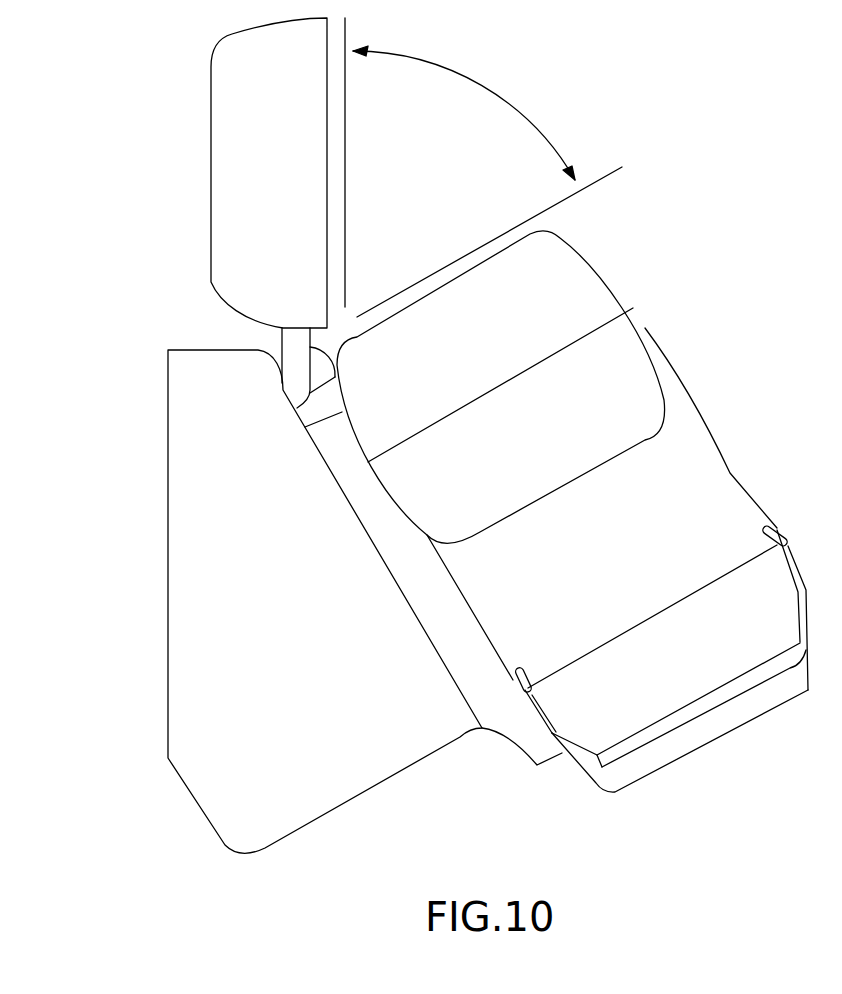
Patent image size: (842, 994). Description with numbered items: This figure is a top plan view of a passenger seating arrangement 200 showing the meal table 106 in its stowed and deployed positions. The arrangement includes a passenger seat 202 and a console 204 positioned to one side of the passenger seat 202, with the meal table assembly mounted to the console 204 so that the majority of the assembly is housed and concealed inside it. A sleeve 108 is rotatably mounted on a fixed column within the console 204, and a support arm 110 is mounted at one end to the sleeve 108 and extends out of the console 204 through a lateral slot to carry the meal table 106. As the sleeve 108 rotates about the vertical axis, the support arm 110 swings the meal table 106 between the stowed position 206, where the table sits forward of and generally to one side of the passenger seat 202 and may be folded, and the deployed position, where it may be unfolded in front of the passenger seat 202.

The meal table 106 is at (222, 173).
The sleeve 108 is at (612, 232).
The support arm 110 is at (297, 348).
The passenger seating arrangement 200 is at (583, 70).
The passenger seat 202 is at (730, 472).
The console 204 is at (175, 583).
The stowed position 206 is at (198, 62).